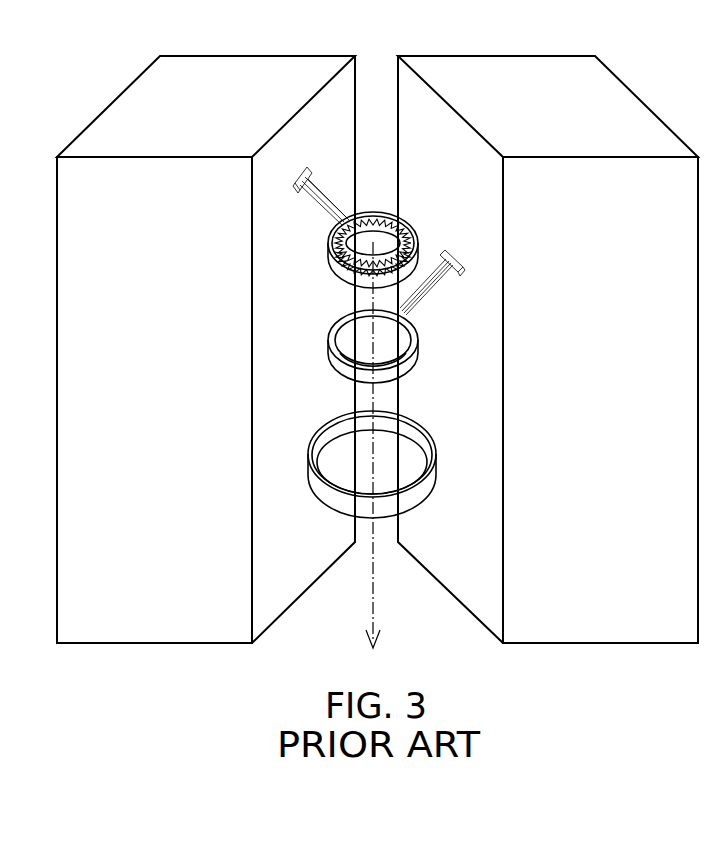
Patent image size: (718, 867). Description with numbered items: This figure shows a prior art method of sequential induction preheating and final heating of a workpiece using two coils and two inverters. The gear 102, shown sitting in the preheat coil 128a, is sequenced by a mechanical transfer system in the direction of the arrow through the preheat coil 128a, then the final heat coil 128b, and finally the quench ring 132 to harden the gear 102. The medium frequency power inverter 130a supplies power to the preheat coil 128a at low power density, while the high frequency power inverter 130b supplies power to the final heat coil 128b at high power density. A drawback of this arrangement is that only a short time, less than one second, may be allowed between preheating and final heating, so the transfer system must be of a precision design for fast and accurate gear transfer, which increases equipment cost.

The gear 102 is at (382, 212).
The preheat coil 128a is at (366, 212).
The final heat coil 128b is at (382, 320).
The medium frequency power inverter 130a is at (180, 379).
The high frequency power inverter 130b is at (625, 379).
The quench ring 132 is at (368, 513).